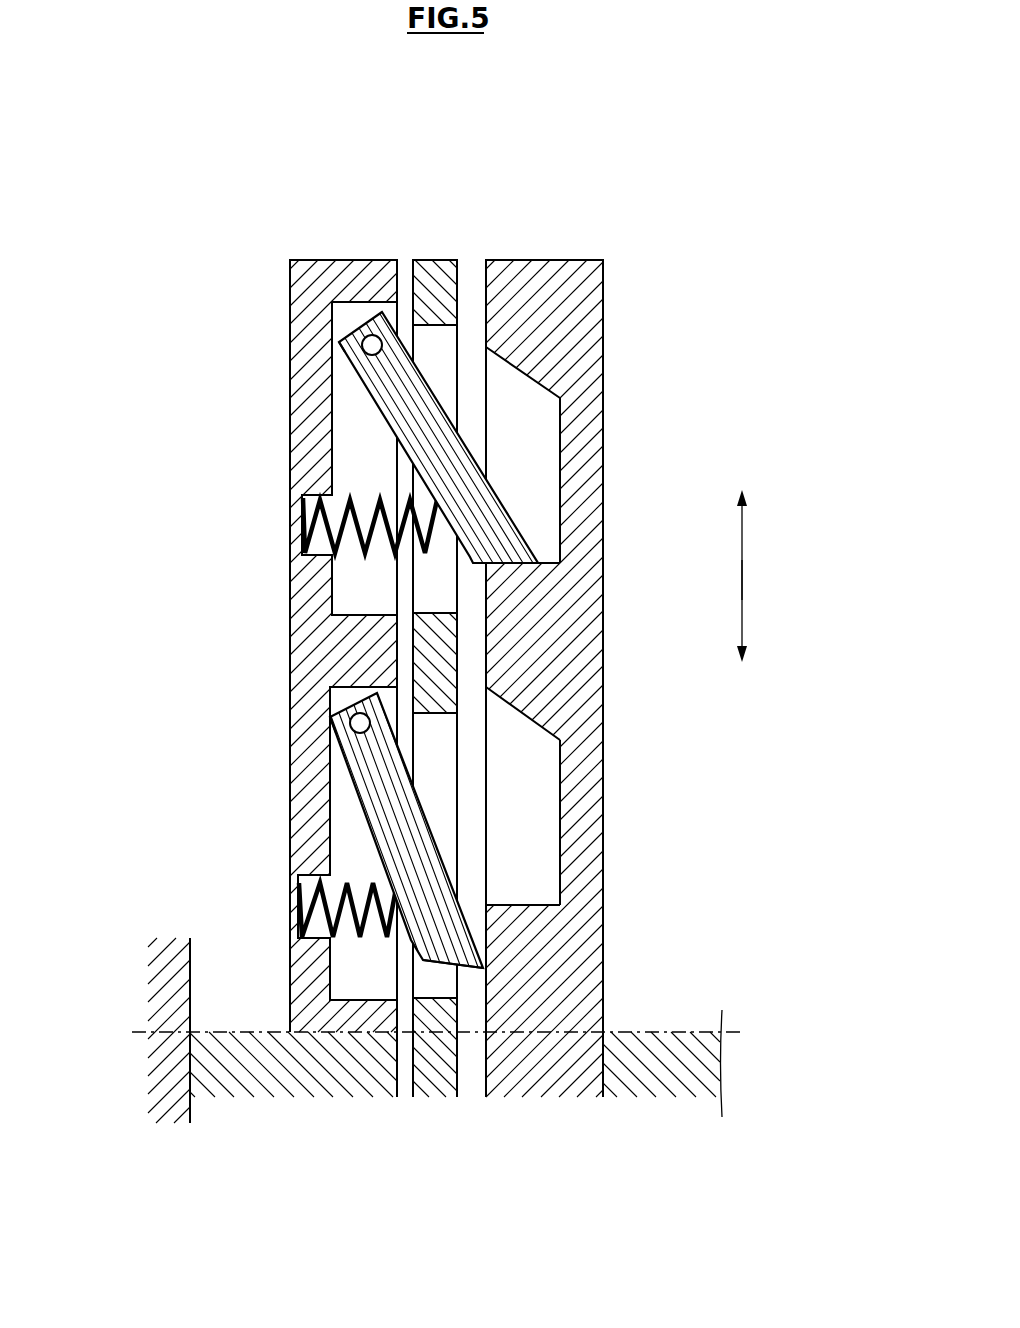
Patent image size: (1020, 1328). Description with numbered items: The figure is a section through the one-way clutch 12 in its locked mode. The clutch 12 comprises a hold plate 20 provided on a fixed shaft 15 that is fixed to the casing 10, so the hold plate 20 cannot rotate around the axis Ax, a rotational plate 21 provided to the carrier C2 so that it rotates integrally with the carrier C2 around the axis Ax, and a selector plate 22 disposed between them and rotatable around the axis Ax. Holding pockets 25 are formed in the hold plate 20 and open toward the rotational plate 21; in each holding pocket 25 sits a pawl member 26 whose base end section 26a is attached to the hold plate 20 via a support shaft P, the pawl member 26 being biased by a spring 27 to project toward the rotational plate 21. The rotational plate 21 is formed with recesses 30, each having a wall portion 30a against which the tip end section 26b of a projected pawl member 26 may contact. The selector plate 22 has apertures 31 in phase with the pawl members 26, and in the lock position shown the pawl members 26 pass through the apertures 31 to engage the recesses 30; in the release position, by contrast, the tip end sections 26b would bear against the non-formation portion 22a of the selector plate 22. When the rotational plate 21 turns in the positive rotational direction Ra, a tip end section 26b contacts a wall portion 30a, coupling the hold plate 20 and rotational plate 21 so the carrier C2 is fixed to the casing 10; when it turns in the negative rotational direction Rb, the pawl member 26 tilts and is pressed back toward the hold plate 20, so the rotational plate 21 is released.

The casing 10 is at (190, 1110).
The clutch 12 is at (667, 212).
The fixed shaft 15 is at (288, 1077).
The hold plate 20 is at (330, 260).
The rotational plate 21 is at (540, 262).
The selector plate 22 is at (549, 635).
The non-formation portion 22a is at (437, 657).
The holding pocket 25 is at (353, 417).
The pawl member 26 is at (447, 463).
The base end section 26a is at (372, 344).
The tip end section 26b is at (513, 565).
The spring 27 is at (347, 508).
The recess 30 is at (532, 457).
The wall portion 30a is at (552, 563).
The aperture 31 is at (440, 363).
The support shaft P is at (340, 342).
The axis Ax is at (145, 1030).
The carrier C2 is at (667, 1080).
The positive rotational direction Ra is at (741, 556).
The negative rotational direction Rb is at (743, 631).